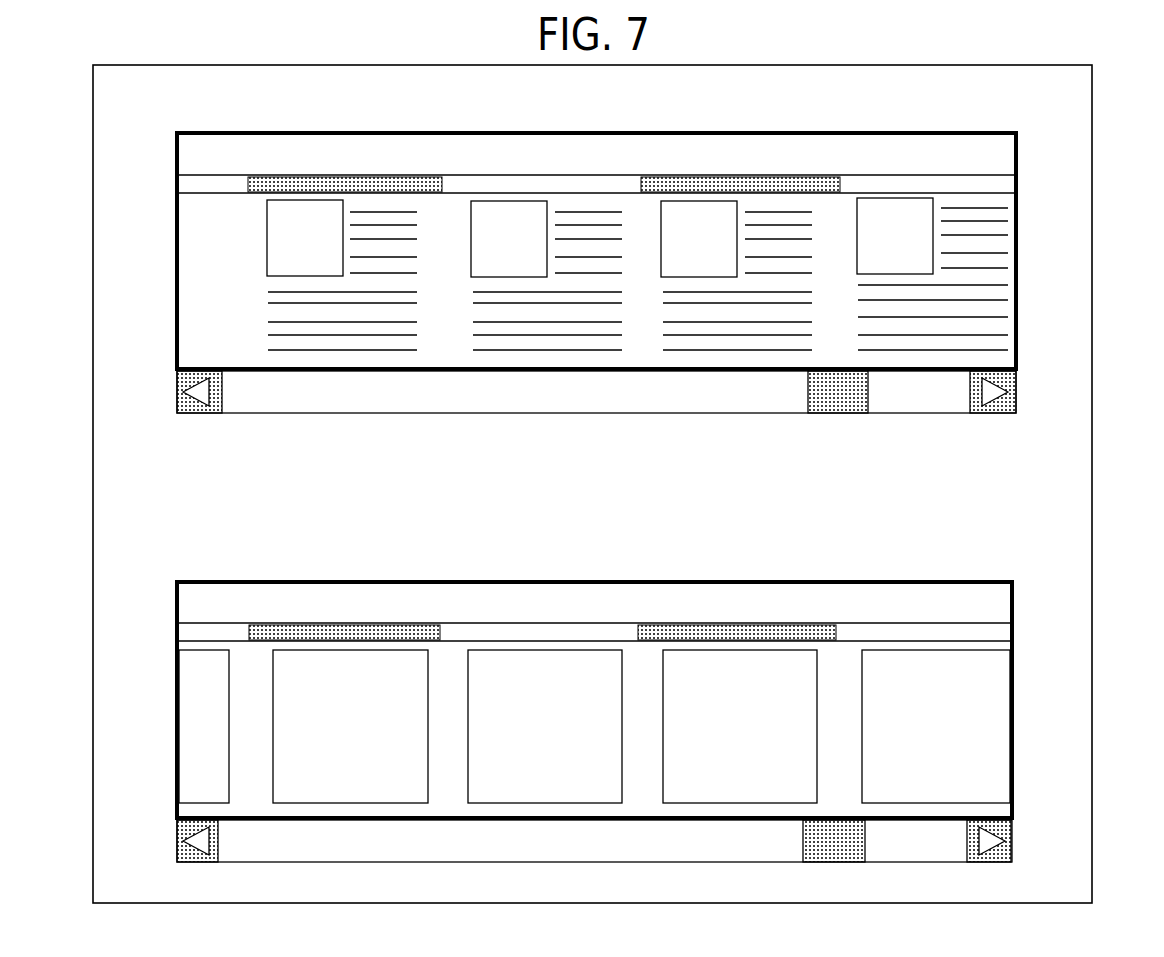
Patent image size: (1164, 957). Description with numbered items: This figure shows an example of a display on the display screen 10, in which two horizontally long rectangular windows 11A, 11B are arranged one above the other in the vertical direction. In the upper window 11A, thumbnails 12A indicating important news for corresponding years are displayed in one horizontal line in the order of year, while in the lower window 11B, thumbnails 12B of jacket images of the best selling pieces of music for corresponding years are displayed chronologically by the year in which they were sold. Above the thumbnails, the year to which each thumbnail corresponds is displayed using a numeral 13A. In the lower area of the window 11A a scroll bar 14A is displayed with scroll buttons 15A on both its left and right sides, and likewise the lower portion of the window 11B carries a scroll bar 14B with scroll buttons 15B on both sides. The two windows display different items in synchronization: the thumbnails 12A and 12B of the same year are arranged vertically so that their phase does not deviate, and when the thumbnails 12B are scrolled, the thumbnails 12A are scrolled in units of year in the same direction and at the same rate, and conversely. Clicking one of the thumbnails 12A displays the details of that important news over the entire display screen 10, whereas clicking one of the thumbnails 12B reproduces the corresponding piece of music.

The display screen 10 is at (1093, 527).
The window 11A is at (1050, 245).
The window 11B is at (1046, 682).
The thumbnails 12A is at (403, 350).
The thumbnails 12B is at (410, 804).
The numeral 13A is at (318, 143).
The scroll bar 14A is at (822, 398).
The scroll bar 14B is at (823, 852).
The scroll buttons 15A is at (206, 396).
The scroll buttons 15B is at (190, 845).